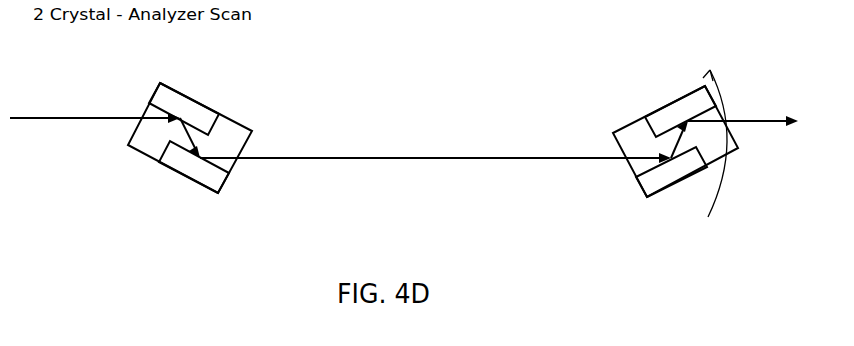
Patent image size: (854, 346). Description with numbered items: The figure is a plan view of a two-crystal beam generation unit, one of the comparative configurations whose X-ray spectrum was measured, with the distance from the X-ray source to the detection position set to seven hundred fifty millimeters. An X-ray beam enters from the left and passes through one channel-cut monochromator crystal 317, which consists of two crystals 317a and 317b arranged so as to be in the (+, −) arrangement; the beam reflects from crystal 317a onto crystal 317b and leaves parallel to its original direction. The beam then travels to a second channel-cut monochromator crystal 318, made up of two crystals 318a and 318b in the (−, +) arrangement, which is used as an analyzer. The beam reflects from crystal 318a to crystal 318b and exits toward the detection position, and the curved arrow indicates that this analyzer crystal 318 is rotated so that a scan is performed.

The channel-cut monochromator crystal 317 is at (179, 93).
The crystal 317a is at (156, 91).
The crystal 317b is at (182, 175).
The channel-cut monochromator crystal 318 is at (625, 126).
The crystal 318a is at (643, 190).
The crystal 318b is at (680, 99).